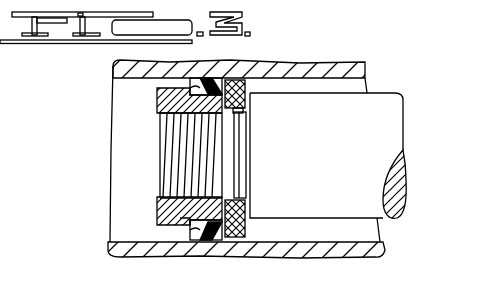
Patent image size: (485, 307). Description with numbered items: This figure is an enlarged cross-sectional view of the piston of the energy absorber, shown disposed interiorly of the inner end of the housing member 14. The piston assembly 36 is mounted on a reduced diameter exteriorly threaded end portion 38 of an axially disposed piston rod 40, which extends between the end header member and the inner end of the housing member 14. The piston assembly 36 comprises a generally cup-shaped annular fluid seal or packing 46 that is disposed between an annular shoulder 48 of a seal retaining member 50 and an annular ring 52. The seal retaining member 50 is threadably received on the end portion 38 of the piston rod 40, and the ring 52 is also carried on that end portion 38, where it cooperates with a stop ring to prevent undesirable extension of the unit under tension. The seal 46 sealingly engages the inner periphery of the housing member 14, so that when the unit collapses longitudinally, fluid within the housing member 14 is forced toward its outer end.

The housing member 14 is at (362, 62).
The piston rod 40 is at (404, 94).
The piston assembly 36 is at (142, 145).
The exteriorly threaded end portion 38 is at (160, 168).
The seal retaining member 50 is at (157, 210).
The annular shoulder 48 is at (185, 220).
The fluid seal 46 is at (204, 239).
The annular ring 52 is at (238, 232).